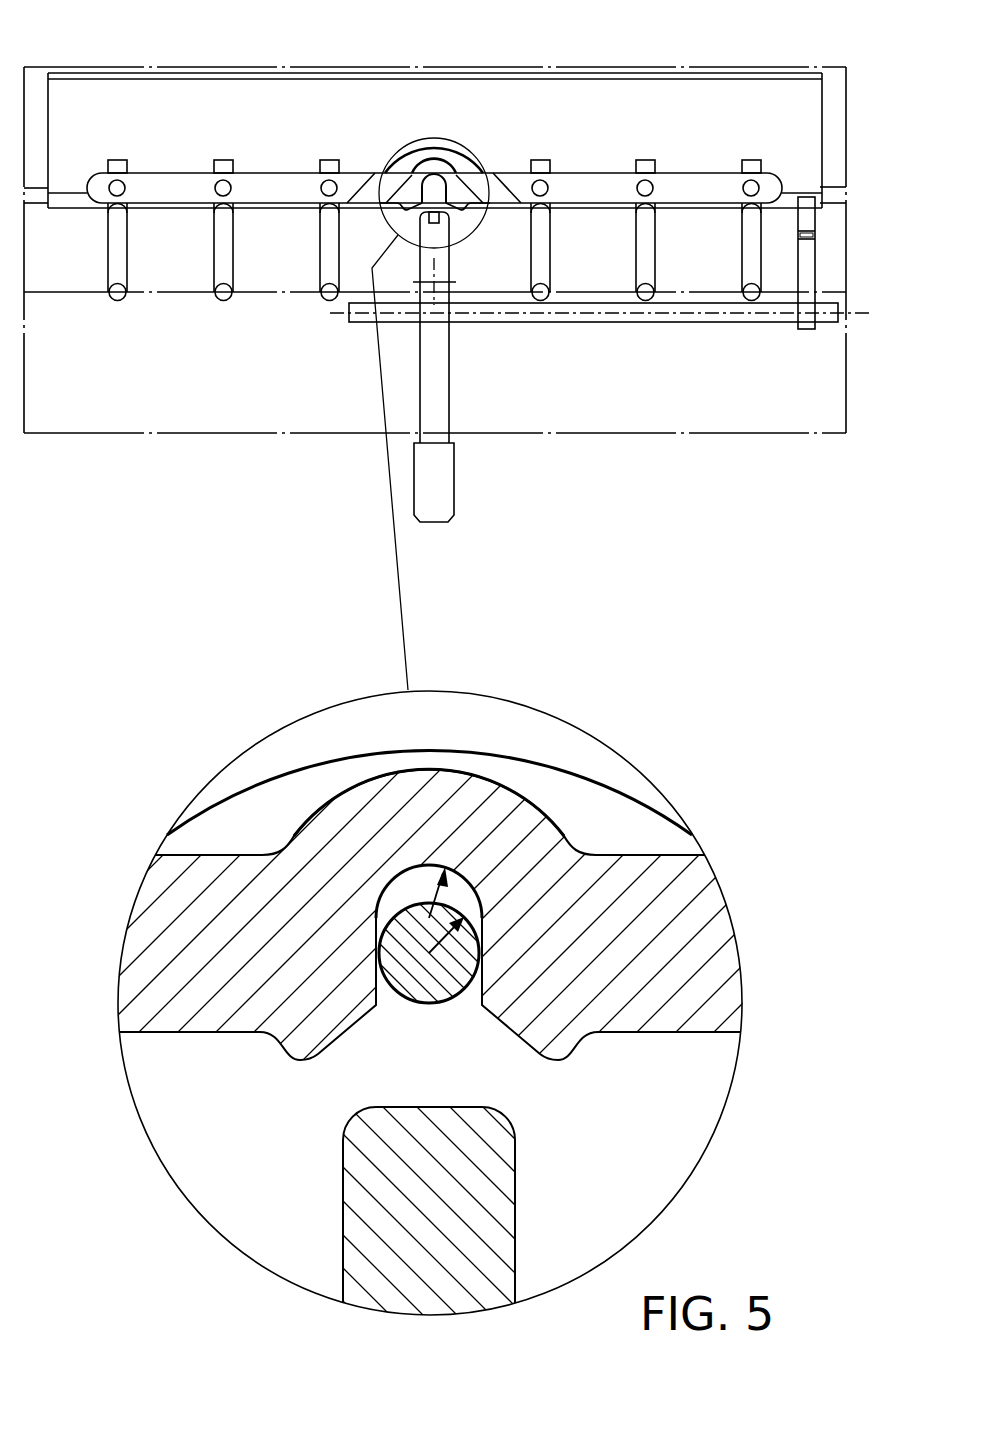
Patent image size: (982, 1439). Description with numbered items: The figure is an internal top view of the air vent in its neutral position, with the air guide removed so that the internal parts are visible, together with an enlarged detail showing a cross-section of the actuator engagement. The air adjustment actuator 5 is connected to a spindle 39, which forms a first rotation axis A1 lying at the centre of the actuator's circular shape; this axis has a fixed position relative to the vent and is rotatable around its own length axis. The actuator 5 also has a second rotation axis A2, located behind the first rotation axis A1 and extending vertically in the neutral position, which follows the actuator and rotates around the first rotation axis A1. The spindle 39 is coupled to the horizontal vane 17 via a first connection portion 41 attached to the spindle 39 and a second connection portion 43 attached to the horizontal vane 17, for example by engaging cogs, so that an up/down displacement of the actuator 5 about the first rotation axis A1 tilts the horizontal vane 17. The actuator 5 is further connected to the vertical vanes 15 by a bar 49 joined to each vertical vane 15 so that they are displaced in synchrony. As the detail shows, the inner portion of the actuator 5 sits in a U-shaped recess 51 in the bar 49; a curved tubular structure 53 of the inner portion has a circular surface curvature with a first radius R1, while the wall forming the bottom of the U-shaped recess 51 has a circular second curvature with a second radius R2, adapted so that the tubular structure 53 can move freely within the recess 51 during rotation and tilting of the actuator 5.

The air adjustment actuator 5 is at (437, 370).
The vertical vanes 15 is at (205, 260).
The horizontal vane 17 is at (240, 128).
The spindle 39 is at (657, 323).
The first connection portion 41 is at (817, 240).
The second connection portion 43 is at (817, 234).
The bar 49 is at (175, 192).
The U-shaped recess 51 is at (385, 905).
The curved tubular structure 53 is at (377, 918).
The first rotation axis A1 is at (340, 313).
The second rotation axis A2 is at (438, 282).
The first radius R1 is at (468, 940).
The second radius R2 is at (397, 898).